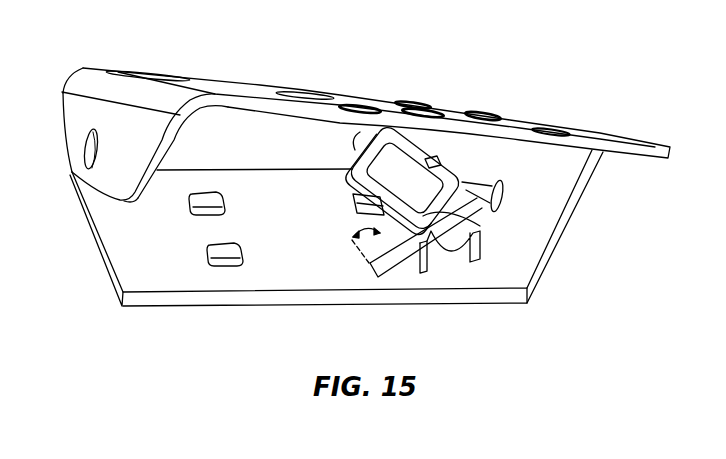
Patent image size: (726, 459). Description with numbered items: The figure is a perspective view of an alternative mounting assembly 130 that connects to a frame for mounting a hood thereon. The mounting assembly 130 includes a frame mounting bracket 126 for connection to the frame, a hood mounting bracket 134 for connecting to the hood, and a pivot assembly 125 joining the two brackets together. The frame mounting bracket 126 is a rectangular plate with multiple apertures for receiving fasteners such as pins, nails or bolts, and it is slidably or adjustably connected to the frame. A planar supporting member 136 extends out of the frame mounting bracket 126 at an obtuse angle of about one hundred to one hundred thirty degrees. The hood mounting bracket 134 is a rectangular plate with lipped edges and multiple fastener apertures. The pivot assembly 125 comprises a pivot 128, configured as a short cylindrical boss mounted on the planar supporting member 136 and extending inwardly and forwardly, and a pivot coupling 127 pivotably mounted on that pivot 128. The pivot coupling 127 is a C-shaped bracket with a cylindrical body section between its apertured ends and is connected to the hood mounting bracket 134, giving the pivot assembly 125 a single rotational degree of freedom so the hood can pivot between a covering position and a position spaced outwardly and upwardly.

The pivot assembly 125 is at (347, 268).
The frame mounting bracket 126 is at (224, 310).
The pivot coupling 127 is at (470, 183).
The pivot 128 is at (371, 138).
The mounting assembly 130 is at (427, 81).
The hood mounting bracket 134 is at (293, 88).
The planar supporting member 136 is at (433, 228).